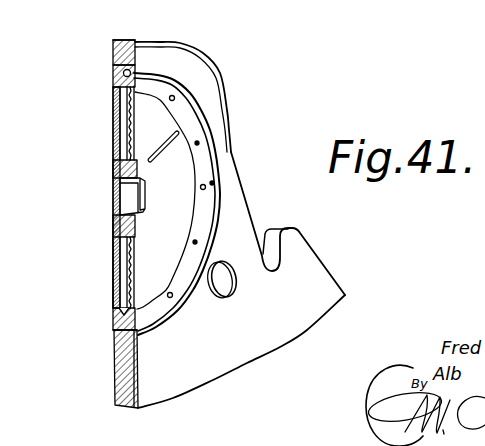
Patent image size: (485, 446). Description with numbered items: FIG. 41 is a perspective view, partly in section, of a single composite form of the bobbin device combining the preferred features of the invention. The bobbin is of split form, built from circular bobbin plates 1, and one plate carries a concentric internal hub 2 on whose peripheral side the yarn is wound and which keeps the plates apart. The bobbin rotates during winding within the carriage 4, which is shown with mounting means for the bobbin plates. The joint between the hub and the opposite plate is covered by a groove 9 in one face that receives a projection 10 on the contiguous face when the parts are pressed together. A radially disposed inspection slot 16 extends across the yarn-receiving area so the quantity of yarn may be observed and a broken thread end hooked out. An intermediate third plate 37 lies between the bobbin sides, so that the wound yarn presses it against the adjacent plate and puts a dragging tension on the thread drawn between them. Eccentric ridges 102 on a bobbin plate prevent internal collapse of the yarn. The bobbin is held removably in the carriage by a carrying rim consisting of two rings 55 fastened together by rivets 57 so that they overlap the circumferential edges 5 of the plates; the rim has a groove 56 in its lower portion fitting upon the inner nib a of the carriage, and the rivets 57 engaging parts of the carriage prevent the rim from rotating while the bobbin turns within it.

The bobbin plate 1 is at (118, 106).
The hub 2 is at (115, 155).
The carriage 4 is at (222, 298).
The circumferential edge 5 is at (118, 312).
The groove 9 is at (138, 174).
The projection 10 is at (118, 173).
The slot 16 is at (176, 143).
The third plate 37 is at (118, 248).
The ring 55 is at (180, 83).
The groove 56 is at (124, 73).
The rivet 57 is at (212, 183).
The eccentric ridge 102 is at (128, 283).
The inner nib a is at (118, 330).